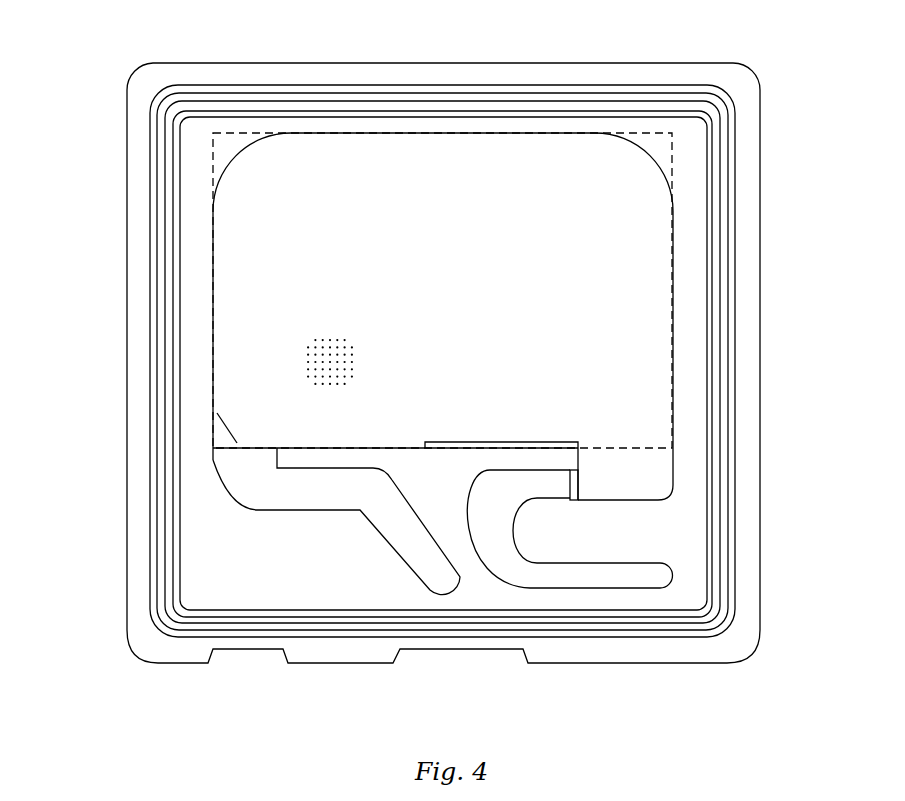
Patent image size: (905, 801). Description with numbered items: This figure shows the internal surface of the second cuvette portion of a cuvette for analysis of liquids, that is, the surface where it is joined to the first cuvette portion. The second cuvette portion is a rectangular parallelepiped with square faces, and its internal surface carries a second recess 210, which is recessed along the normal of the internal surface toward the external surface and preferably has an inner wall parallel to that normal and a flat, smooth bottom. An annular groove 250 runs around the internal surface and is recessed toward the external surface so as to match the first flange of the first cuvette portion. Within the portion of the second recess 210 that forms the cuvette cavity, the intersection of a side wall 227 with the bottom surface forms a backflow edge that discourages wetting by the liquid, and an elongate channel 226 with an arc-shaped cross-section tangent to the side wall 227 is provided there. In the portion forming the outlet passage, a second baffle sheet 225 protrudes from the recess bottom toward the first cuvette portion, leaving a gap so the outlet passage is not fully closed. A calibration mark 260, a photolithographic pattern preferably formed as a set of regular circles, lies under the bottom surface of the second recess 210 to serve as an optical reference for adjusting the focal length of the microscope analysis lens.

The second recess 210 is at (557, 305).
The second baffle sheet 225 is at (573, 490).
The channel 226 is at (578, 442).
The side wall 227 is at (365, 448).
The annular groove 250 is at (177, 168).
The calibration mark 260 is at (322, 361).